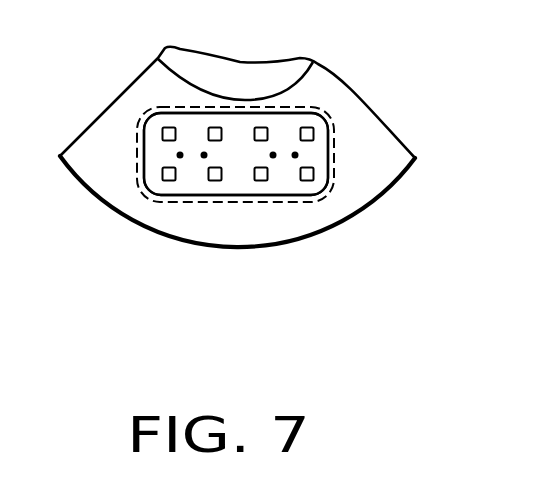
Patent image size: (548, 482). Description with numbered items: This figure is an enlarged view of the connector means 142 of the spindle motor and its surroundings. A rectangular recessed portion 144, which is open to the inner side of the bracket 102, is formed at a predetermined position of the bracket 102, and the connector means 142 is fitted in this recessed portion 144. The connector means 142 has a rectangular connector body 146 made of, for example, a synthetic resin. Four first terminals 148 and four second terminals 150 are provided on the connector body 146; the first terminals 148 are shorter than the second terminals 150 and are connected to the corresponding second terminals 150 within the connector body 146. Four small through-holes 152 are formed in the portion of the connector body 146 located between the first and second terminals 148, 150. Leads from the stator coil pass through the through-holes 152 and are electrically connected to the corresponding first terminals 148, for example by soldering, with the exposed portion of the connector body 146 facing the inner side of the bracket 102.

The bracket 102 is at (404, 174).
The connector means 142 is at (143, 164).
The recessed portion 144 is at (333, 182).
The connector body 146 is at (238, 127).
The first terminals 148 is at (263, 132).
The second terminals 150 is at (261, 176).
The through-holes 152 is at (273, 155).